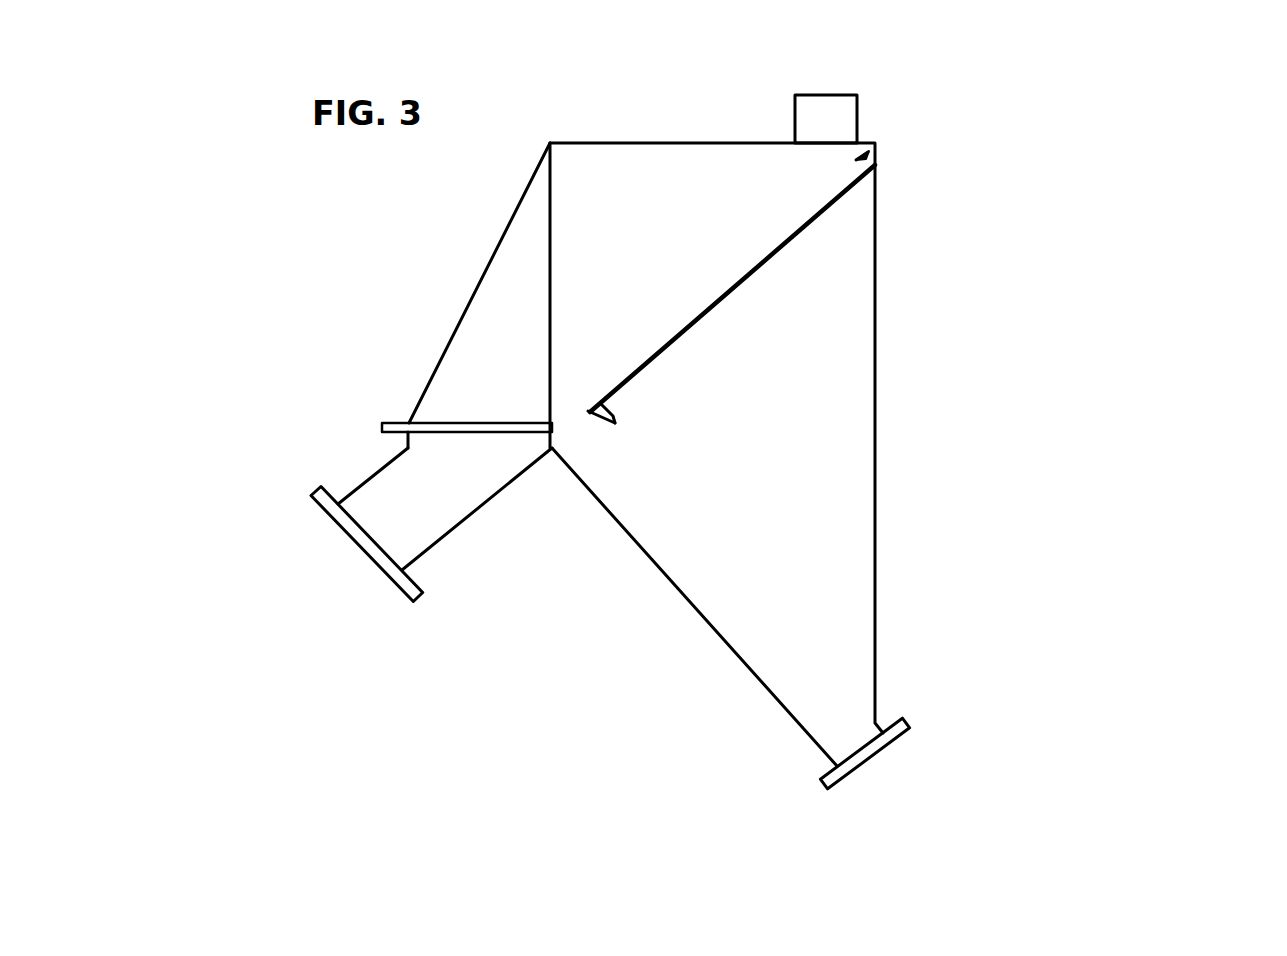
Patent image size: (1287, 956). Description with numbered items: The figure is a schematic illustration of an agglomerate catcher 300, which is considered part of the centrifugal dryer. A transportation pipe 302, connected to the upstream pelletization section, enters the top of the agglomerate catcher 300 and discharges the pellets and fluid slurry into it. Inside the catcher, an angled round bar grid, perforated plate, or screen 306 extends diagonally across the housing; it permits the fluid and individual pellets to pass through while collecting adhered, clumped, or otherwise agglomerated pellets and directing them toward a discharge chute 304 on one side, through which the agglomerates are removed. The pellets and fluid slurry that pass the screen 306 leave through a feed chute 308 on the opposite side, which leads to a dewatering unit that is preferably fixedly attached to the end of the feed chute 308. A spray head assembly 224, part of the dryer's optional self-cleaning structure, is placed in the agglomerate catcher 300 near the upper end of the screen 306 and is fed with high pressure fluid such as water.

The agglomerate catcher 300 is at (500, 438).
The transportation pipe 302 is at (847, 108).
The spray head assembly 224 is at (862, 157).
The angled round bar grid, perforated plate, or screen 306 is at (745, 278).
The discharge chute 304 is at (447, 515).
The feed chute 308 is at (785, 689).